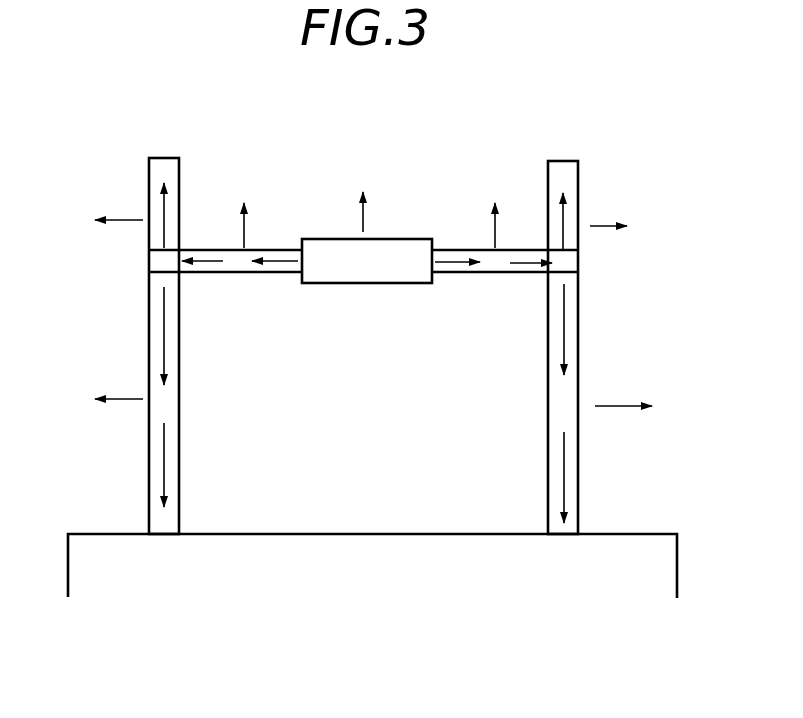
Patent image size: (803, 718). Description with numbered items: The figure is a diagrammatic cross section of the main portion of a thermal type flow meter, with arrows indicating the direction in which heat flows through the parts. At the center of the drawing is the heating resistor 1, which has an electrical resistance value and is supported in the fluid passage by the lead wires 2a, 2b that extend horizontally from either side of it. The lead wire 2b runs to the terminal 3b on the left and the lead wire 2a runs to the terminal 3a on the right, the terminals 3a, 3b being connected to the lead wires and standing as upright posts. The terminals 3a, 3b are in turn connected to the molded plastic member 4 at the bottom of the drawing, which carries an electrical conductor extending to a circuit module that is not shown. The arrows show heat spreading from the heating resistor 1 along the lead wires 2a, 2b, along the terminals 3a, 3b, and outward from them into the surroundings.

The heating resistor 1 is at (330, 277).
The lead wire 2a is at (497, 265).
The lead wire 2b is at (205, 250).
The terminal 3a is at (568, 188).
The terminal 3b is at (165, 185).
The molded plastic member 4 is at (248, 563).